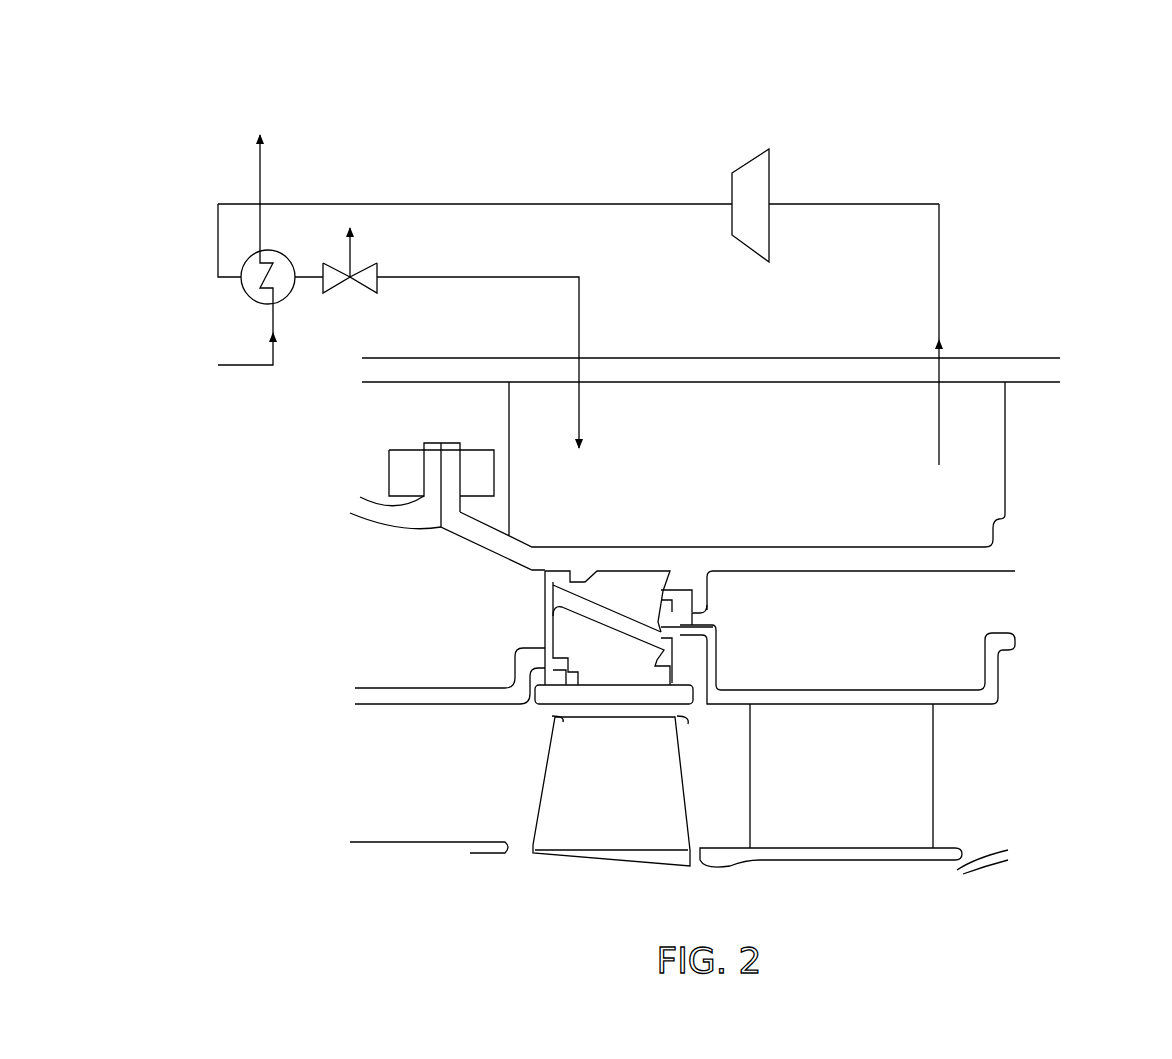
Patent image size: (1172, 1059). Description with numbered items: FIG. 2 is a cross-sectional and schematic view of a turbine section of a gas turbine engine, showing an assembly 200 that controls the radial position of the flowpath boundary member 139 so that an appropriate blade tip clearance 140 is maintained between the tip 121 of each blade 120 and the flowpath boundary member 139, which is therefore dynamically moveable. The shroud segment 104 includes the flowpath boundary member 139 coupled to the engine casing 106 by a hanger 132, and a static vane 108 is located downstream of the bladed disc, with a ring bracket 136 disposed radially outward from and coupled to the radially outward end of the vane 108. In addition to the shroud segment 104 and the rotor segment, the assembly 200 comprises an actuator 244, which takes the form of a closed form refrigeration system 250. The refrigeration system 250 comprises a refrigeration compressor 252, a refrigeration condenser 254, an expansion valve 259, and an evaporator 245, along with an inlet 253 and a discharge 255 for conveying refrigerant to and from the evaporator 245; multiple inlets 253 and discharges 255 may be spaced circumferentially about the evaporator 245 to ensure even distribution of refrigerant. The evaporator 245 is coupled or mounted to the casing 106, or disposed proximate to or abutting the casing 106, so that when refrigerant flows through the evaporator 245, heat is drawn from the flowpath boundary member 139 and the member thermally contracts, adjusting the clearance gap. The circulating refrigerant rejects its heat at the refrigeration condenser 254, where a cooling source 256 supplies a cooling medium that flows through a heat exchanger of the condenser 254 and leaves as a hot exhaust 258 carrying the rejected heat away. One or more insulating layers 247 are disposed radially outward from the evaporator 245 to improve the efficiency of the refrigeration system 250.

The assembly 200 is at (1065, 112).
The closed form refrigeration system 250 is at (472, 127).
The refrigeration compressor 252 is at (735, 174).
The refrigeration condenser 254 is at (250, 258).
The cooling source 256 is at (229, 348).
The hot exhaust 258 is at (278, 182).
The expansion valve 259 is at (340, 258).
The inlet 253 is at (579, 308).
The discharge 255 is at (939, 247).
The actuator 244 is at (1030, 303).
The insulating layer 247 is at (1032, 383).
The evaporator 245 is at (725, 482).
The shroud segment 104 is at (324, 572).
The hanger 132 is at (545, 597).
The flowpath boundary member 139 is at (600, 690).
The blade tip clearance 140 is at (548, 714).
The tip 121 is at (681, 708).
The blade 120 is at (591, 793).
The static vane 108 is at (820, 792).
The engine casing 106 is at (918, 571).
The ring bracket 136 is at (978, 705).